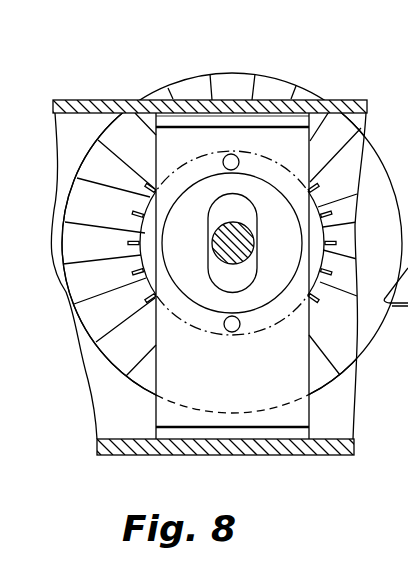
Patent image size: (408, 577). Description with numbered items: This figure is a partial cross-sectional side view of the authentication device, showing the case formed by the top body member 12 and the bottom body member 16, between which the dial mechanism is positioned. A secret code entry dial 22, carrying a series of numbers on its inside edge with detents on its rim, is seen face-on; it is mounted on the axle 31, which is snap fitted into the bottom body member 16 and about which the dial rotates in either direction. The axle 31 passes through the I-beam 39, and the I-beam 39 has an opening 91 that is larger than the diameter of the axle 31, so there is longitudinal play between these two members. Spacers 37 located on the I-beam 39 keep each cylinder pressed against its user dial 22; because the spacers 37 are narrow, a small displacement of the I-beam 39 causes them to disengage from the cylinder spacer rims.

The top body member 12 is at (73, 100).
The bottom body member 16 is at (97, 452).
The secret code entry dial 22 is at (286, 86).
The axle 31 is at (256, 257).
The spacer 37 is at (240, 162).
The I-beam 39 is at (302, 168).
The opening 91 is at (249, 286).